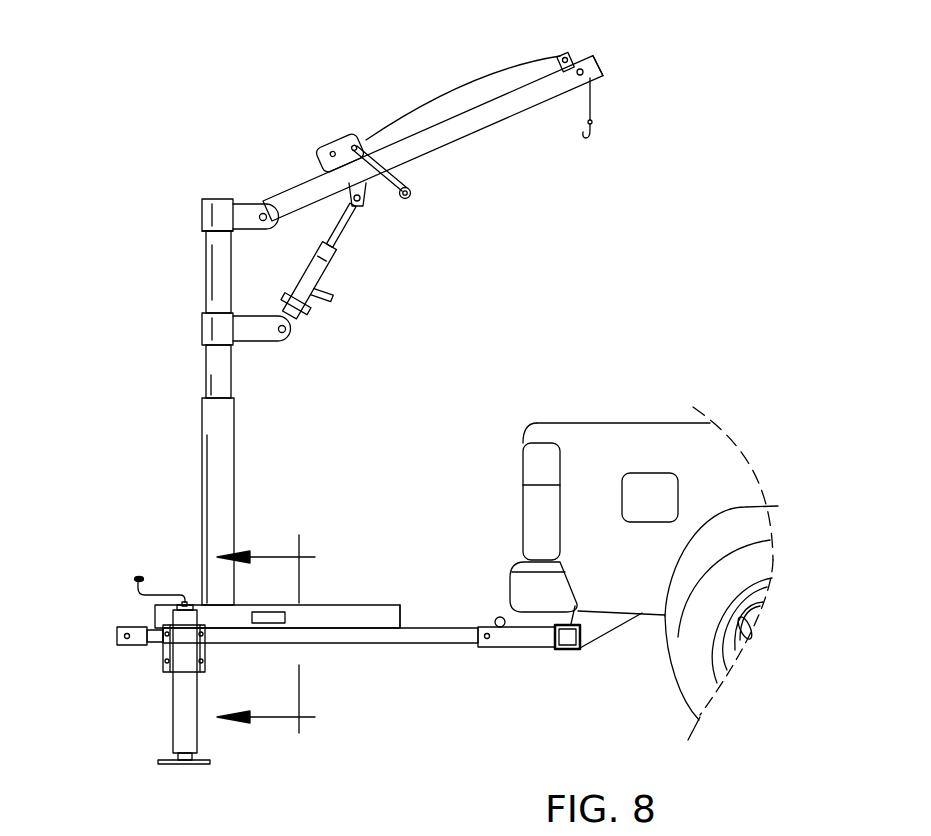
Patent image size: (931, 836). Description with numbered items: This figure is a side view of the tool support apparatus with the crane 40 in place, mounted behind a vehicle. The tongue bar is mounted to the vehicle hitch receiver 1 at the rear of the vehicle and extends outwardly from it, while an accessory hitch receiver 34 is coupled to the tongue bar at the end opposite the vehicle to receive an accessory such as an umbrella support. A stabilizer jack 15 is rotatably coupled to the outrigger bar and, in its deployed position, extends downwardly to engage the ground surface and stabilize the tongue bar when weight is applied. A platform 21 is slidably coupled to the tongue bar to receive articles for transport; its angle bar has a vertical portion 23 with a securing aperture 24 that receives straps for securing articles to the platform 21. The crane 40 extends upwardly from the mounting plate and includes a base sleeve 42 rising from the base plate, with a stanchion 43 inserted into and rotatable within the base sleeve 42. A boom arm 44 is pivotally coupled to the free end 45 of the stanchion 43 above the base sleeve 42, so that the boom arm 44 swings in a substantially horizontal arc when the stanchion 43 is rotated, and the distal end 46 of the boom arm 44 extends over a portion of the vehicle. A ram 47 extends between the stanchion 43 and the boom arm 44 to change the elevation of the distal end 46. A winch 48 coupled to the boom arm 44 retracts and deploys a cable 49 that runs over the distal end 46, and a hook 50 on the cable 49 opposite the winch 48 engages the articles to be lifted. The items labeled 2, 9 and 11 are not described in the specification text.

The vehicle hitch receiver 1 is at (520, 637).
The vehicle 2 is at (607, 453).
The section line 9- 9 is at (266, 637).
The frame beam 11 is at (437, 637).
The stabilizer jack 15 is at (173, 735).
The platform 21 is at (405, 605).
The vertical portion 23 is at (343, 614).
The securing aperture 24 is at (285, 617).
The accessory hitch receiver 34 is at (137, 637).
The crane 40 is at (203, 199).
The base sleeve 42 is at (222, 441).
The stanchion 43 is at (213, 362).
The boom arm 44 is at (292, 200).
The free end 45 is at (201, 229).
The distal end 46 is at (603, 63).
The ram 47 is at (318, 268).
The winch 48 is at (340, 148).
The cable 49 is at (380, 123).
The hook 50 is at (588, 140).